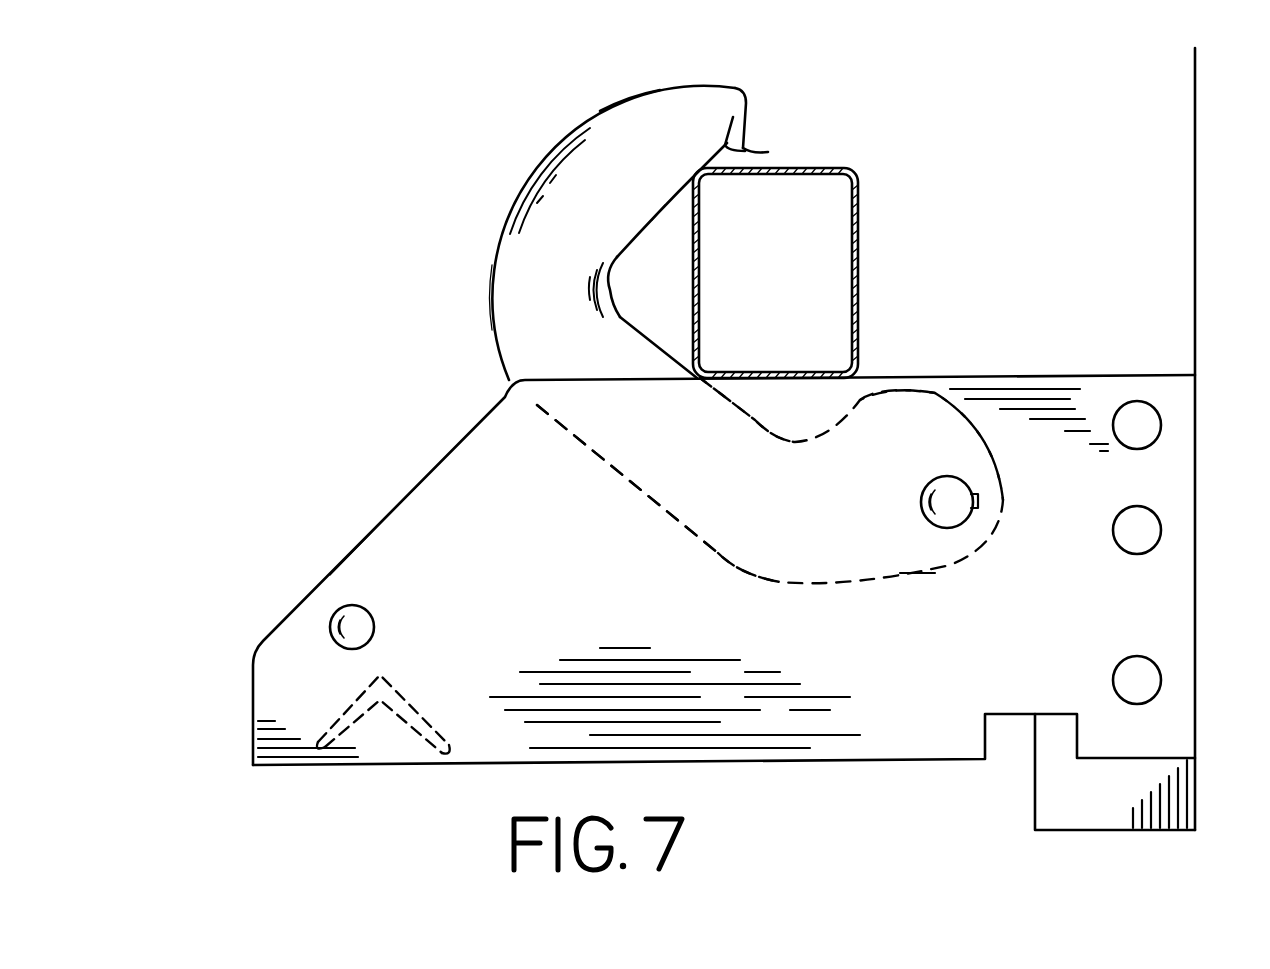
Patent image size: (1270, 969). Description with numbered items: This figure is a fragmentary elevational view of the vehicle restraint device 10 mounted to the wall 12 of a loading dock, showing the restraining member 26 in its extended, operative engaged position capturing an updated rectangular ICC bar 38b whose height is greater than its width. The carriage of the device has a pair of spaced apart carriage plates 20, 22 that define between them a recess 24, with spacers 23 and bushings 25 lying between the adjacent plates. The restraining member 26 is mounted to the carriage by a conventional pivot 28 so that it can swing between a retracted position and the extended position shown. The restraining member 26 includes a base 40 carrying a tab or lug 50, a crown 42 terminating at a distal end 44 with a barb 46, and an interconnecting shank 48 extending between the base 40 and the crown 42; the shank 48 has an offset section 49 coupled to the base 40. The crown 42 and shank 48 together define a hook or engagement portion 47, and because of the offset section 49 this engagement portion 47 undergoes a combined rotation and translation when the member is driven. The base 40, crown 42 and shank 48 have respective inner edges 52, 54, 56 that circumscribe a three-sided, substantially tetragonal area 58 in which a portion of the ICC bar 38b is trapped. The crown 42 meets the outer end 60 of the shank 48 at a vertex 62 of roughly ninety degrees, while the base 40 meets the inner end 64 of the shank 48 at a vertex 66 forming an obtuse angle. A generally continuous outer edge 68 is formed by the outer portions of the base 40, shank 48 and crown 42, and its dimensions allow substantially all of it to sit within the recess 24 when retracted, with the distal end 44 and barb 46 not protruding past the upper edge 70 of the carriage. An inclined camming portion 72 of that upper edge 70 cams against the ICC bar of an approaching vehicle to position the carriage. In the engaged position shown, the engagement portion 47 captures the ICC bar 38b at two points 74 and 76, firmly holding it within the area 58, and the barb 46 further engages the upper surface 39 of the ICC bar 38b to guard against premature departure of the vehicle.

The vehicle restraint device 10 is at (395, 113).
The wall 12 is at (1195, 183).
The carriage plate 20 is at (1133, 818).
The carriage plate 22 is at (1008, 628).
The spacer 23 is at (333, 723).
The recess 24 is at (525, 525).
The bushing 25 is at (1161, 420).
The restraining member 26 is at (558, 133).
The pivot 28 is at (963, 483).
The ICC bar 38b is at (857, 177).
The upper surface 39 is at (800, 165).
The base 40 is at (985, 546).
The crown 42 is at (623, 110).
The distal end 44 is at (733, 87).
The barb 46 is at (768, 152).
The engagement portion 47 is at (535, 254).
The shank 48 is at (622, 478).
The offset section 49 is at (778, 433).
The lug 50 is at (938, 406).
The inner edge 52 is at (836, 428).
The inner edge 54 is at (663, 347).
The inner edge 56 is at (650, 230).
The area 58 is at (880, 283).
The outer end 60 is at (548, 345).
The vertex 62 is at (612, 289).
The inner end 64 is at (733, 533).
The vertex 66 is at (792, 442).
The outer edge 68 is at (503, 210).
The upper edge 70 is at (880, 380).
The inclined camming portion 72 is at (378, 525).
The contact point 74 is at (697, 173).
The contact point 76 is at (700, 378).